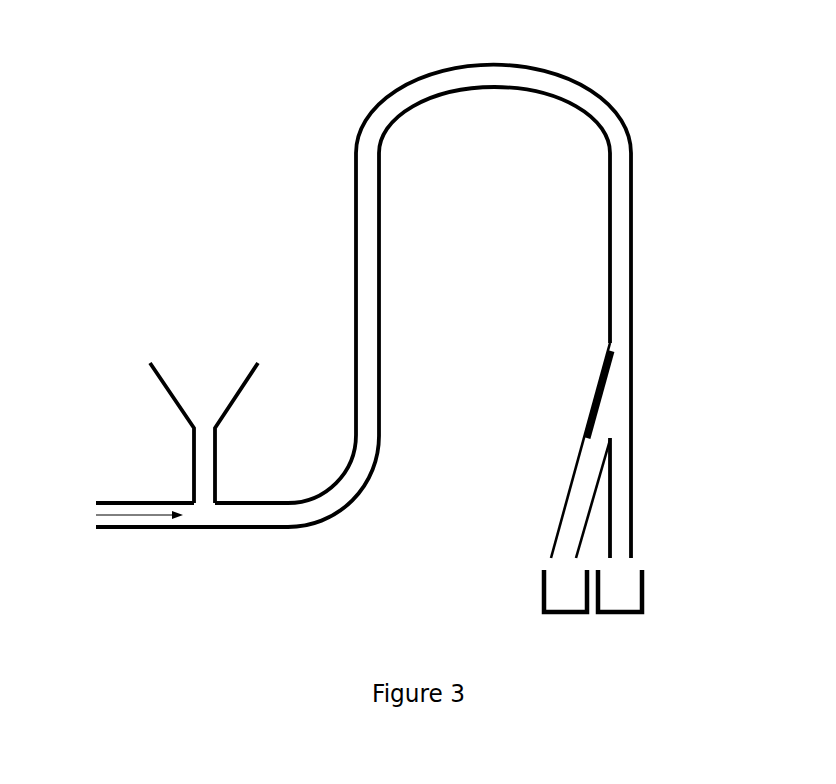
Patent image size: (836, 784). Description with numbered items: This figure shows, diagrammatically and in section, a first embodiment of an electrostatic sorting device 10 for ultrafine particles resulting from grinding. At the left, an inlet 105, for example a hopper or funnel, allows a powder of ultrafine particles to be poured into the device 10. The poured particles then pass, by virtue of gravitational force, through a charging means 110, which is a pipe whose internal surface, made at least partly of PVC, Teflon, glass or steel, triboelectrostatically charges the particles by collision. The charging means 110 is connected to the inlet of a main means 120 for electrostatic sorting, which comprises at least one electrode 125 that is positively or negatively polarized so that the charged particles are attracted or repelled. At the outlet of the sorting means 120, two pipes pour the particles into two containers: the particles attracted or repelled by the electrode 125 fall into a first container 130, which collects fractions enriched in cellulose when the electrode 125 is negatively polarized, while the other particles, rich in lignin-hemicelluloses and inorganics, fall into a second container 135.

The sorting apparatus 10 is at (314, 121).
The inlet for ultrafine particles 105 is at (183, 385).
The charging means 110 is at (357, 210).
The main means for electrostatic sorting 120 is at (620, 384).
The electrode 125 is at (587, 427).
The first container 130 is at (543, 593).
The second container 135 is at (643, 592).